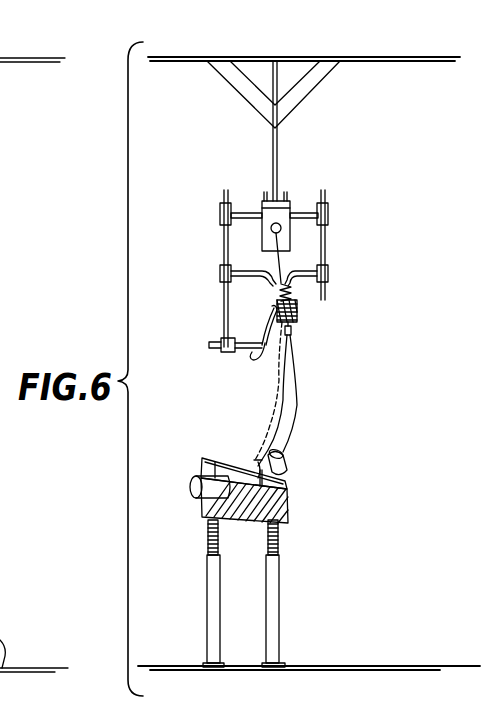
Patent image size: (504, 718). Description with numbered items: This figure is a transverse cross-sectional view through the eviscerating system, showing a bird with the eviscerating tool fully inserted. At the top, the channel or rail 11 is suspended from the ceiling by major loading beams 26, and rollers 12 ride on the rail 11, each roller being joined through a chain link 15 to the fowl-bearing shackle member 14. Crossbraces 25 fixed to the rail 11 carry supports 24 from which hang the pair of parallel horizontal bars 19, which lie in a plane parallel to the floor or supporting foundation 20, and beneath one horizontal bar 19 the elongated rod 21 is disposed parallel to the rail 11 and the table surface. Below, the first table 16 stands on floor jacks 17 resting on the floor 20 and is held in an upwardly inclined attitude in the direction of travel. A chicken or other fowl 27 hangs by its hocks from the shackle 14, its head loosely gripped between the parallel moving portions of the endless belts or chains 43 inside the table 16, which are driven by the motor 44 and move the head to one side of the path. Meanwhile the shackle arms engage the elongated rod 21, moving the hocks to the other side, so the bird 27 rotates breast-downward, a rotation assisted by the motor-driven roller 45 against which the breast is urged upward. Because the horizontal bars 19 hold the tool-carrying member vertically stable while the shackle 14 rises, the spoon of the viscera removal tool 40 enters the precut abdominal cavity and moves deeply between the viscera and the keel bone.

The channel or rail 11 is at (291, 160).
The rollers 12 is at (265, 192).
The shackle member 14 is at (297, 341).
The chain link 15 is at (280, 213).
The first table 16 is at (252, 510).
The floor jacks 17 is at (273, 580).
The horizontal bars 19 is at (258, 270).
The floor or supporting foundation 20 is at (382, 666).
The elongated rod 21 is at (272, 352).
The supports 24 is at (227, 258).
The crossbraces 25 is at (300, 178).
The major loading beams 26 is at (280, 151).
The chicken or other fowl 27 is at (272, 425).
The viscera removal tool 40 is at (300, 413).
The endless belts or chains 43 is at (258, 461).
The motor 44 is at (201, 496).
The motor-driven roller 45 is at (285, 469).